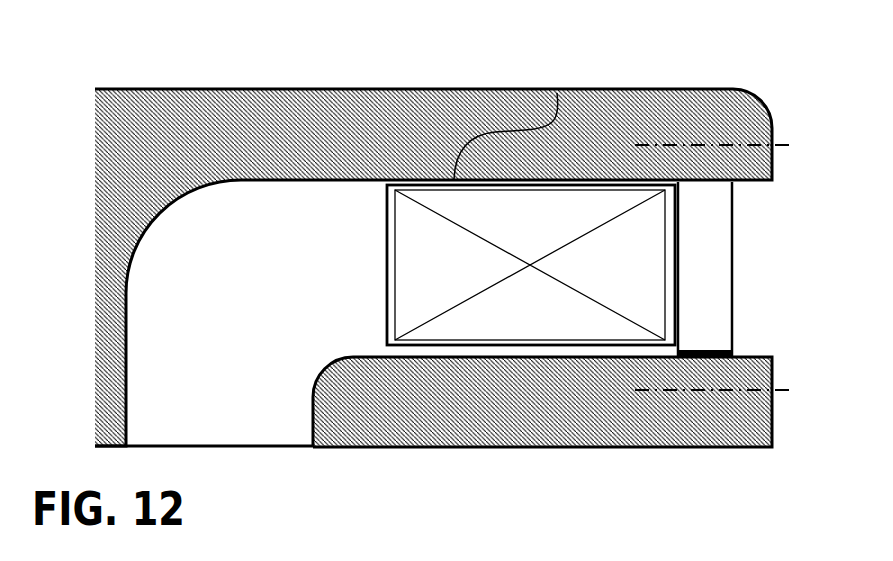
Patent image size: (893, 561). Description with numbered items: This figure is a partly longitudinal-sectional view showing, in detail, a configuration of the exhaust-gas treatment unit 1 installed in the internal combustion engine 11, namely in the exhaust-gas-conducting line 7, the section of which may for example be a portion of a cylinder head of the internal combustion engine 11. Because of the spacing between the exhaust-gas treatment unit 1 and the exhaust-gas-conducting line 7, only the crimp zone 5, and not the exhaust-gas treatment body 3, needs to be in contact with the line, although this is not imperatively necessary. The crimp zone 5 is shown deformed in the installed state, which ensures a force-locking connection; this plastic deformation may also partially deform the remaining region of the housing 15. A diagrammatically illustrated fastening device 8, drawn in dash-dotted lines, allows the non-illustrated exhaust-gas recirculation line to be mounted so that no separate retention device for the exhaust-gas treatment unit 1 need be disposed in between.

The exhaust-gas treatment unit 1 is at (748, 297).
The exhaust-gas treatment body 3 is at (557, 328).
The crimp zone 5 is at (708, 337).
The exhaust-gas-conducting line 7 is at (347, 332).
The fastening device 8 is at (777, 145).
The internal combustion engine 11 is at (281, 75).
The housing 15 is at (557, 93).